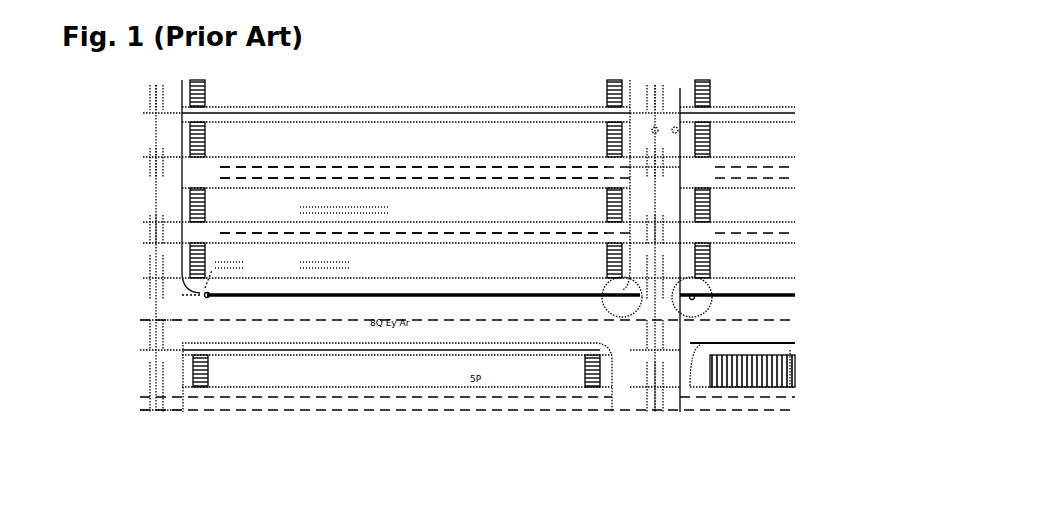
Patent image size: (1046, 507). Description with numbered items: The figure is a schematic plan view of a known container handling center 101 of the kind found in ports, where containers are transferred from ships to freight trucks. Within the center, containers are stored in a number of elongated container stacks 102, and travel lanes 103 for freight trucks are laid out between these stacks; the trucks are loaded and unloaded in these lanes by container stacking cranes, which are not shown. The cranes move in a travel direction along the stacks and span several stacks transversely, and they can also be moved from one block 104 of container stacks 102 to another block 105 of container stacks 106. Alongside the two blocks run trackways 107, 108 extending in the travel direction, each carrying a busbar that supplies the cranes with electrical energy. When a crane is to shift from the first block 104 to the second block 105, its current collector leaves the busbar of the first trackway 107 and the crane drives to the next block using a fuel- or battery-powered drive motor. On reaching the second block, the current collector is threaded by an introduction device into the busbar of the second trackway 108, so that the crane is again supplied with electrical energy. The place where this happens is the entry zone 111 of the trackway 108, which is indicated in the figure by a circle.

The container handling center 101 is at (818, 71).
The container stacks 102 is at (500, 253).
The travel lanes 103 is at (405, 235).
The block 104 is at (180, 126).
The block 105 is at (680, 88).
The container stacks 106 is at (737, 250).
The trackway 107 is at (568, 297).
The trackway 108 is at (782, 297).
The entry zone 111 is at (682, 300).